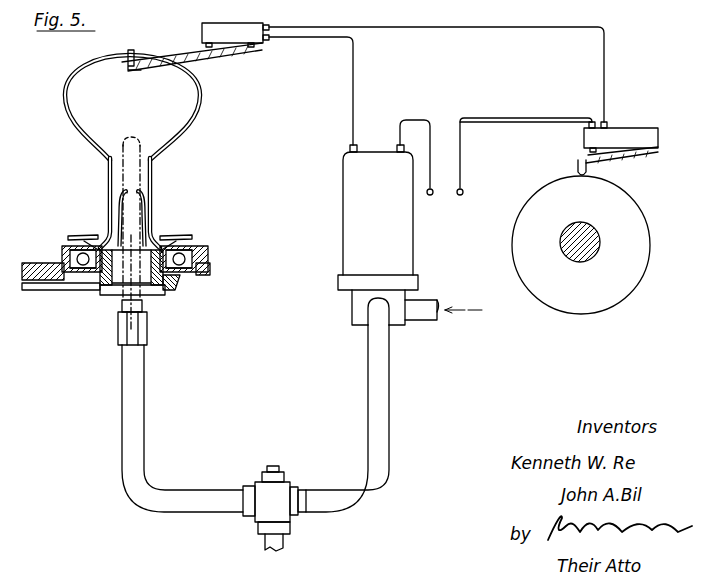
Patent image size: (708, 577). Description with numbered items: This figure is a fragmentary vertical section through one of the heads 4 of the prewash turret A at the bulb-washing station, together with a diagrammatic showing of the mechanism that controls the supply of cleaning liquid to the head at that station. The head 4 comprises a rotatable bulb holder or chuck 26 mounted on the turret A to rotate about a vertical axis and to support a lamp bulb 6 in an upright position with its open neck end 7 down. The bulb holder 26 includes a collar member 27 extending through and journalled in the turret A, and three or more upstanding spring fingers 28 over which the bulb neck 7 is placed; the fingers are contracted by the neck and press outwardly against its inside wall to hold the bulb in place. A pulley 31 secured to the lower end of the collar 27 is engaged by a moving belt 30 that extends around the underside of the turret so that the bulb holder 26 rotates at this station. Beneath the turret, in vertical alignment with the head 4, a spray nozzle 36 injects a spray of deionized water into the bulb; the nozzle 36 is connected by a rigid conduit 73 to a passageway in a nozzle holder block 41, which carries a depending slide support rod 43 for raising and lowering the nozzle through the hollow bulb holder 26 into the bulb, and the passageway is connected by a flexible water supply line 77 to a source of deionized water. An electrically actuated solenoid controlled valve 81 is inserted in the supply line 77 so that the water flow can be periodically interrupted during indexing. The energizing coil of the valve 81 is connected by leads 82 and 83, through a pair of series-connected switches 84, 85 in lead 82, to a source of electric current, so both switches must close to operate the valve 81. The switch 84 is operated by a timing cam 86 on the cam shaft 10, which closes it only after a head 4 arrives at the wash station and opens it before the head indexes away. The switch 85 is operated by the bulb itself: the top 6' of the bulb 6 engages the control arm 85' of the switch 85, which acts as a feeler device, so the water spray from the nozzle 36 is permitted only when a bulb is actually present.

The lamp bulb 6 is at (118, 107).
The top of the bulb 6' is at (93, 59).
The open neck end of bulb 7 is at (108, 187).
The upstanding spring fingers 28 is at (120, 212).
The rotatable bulb holder or chuck 26 is at (195, 242).
The head 4 is at (222, 249).
The turret or carrier member A is at (205, 266).
The moving belt 30 is at (62, 285).
The pulley 31 is at (164, 290).
The collar member 27 is at (112, 287).
The spray nozzle 36 is at (148, 316).
The rigid piping or conduit 73 is at (138, 400).
The nozzle holder block 41 is at (262, 472).
The slide support rod 43 is at (265, 544).
The flexible water supply line 77 is at (383, 408).
The solenoid controlled valve 81 is at (404, 245).
The switch 85 is at (241, 23).
The control arm of switch 85' is at (192, 46).
The lead 82 is at (501, 27).
The lead 83 is at (416, 120).
The switch 84 is at (637, 128).
The timing cam 86 is at (632, 275).
The cam shaft 10 is at (590, 258).